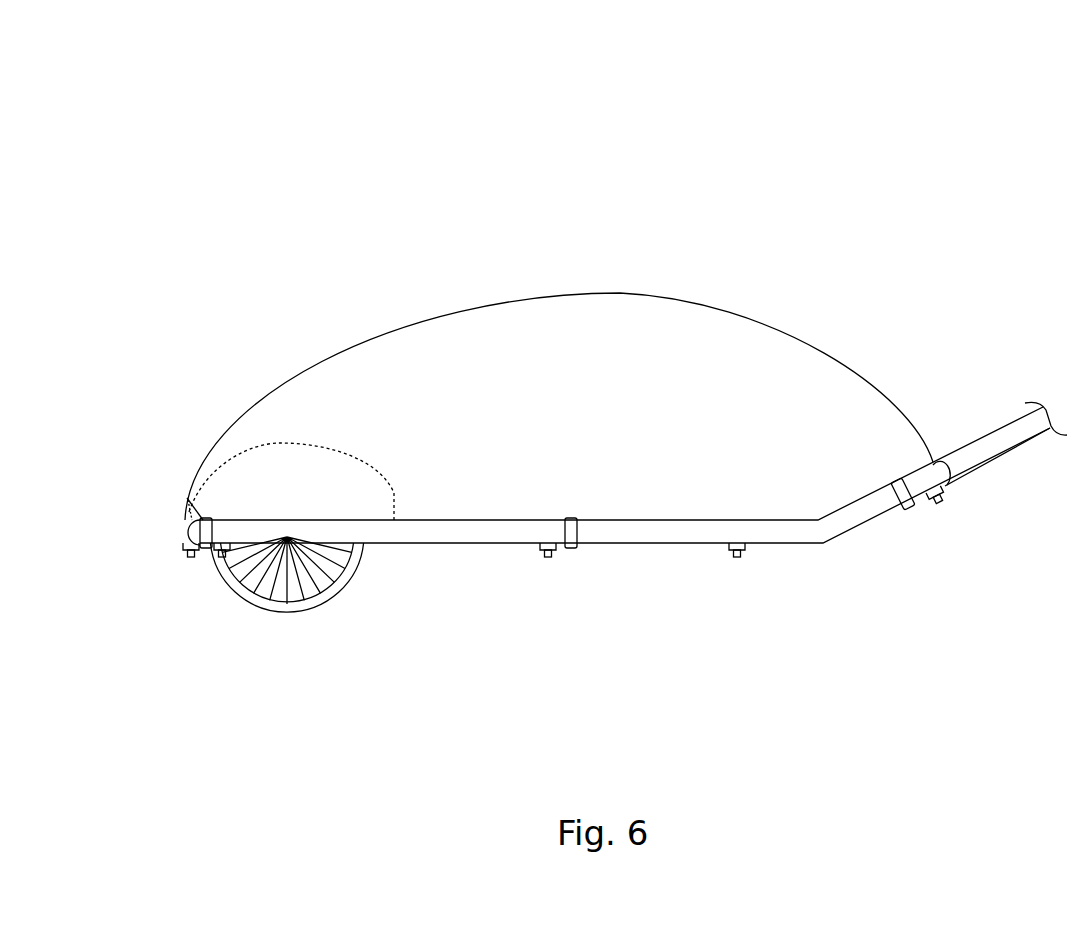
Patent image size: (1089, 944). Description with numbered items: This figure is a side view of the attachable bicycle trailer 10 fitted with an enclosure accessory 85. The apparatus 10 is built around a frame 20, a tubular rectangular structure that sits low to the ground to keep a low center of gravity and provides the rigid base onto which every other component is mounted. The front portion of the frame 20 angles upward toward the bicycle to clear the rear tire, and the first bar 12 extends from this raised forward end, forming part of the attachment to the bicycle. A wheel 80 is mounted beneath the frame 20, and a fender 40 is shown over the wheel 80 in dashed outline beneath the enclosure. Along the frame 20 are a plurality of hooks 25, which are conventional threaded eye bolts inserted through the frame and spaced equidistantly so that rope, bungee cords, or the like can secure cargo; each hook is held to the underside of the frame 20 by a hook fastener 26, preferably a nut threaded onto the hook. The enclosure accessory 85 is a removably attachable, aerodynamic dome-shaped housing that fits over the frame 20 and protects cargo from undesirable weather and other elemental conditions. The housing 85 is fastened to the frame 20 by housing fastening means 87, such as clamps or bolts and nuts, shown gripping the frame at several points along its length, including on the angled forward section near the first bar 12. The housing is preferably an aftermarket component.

The attachable bicycle trailer 10 is at (610, 178).
The first bar 12 is at (1001, 443).
The frame 20 is at (775, 525).
The hooks 25 is at (222, 557).
The hook fasteners 26 is at (186, 548).
The fender 40 is at (293, 458).
The wheel 80 is at (330, 590).
The enclosure accessory 85 is at (632, 335).
The housing fastening means 87 is at (190, 503).